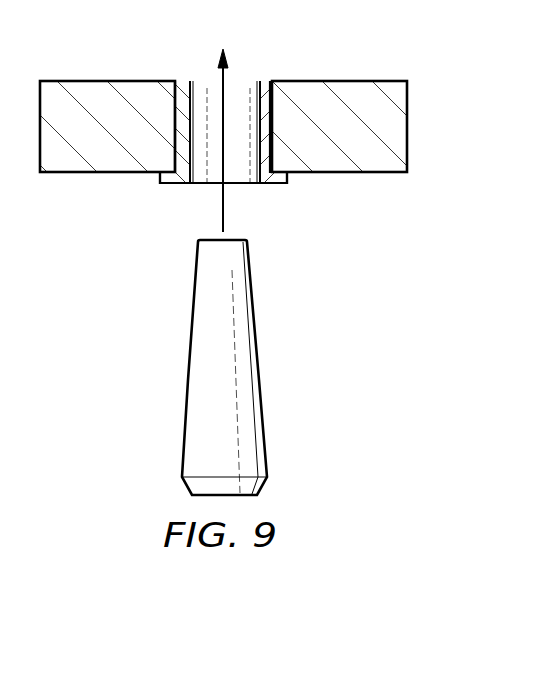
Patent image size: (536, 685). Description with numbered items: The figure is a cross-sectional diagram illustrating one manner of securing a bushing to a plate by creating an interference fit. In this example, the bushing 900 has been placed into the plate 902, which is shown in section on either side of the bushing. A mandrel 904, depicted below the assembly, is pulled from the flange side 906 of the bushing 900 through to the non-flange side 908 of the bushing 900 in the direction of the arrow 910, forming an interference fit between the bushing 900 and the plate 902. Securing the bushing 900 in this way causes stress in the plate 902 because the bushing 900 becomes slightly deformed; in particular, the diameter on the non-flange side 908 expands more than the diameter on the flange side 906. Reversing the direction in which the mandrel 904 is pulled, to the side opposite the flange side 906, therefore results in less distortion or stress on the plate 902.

The bushing 900 is at (273, 107).
The plate 902 is at (352, 80).
The mandrel 904 is at (190, 345).
The flange side 906 is at (160, 176).
The non-flange side 908 is at (183, 86).
The arrow 910 is at (227, 207).